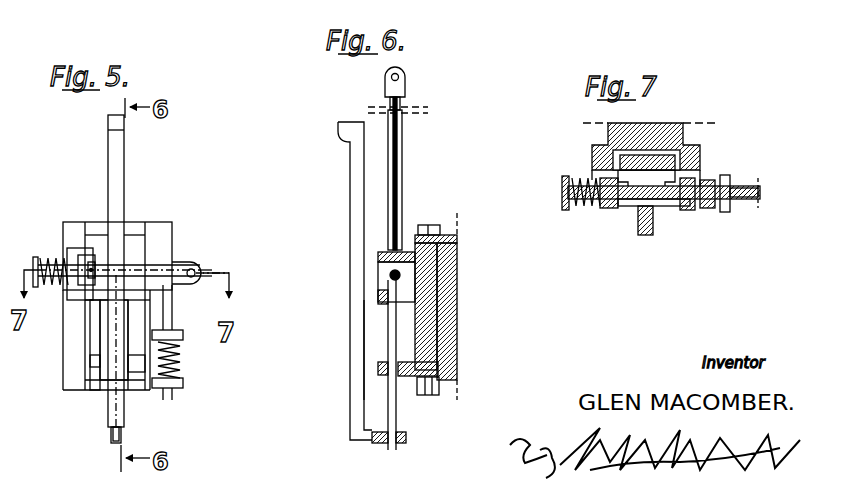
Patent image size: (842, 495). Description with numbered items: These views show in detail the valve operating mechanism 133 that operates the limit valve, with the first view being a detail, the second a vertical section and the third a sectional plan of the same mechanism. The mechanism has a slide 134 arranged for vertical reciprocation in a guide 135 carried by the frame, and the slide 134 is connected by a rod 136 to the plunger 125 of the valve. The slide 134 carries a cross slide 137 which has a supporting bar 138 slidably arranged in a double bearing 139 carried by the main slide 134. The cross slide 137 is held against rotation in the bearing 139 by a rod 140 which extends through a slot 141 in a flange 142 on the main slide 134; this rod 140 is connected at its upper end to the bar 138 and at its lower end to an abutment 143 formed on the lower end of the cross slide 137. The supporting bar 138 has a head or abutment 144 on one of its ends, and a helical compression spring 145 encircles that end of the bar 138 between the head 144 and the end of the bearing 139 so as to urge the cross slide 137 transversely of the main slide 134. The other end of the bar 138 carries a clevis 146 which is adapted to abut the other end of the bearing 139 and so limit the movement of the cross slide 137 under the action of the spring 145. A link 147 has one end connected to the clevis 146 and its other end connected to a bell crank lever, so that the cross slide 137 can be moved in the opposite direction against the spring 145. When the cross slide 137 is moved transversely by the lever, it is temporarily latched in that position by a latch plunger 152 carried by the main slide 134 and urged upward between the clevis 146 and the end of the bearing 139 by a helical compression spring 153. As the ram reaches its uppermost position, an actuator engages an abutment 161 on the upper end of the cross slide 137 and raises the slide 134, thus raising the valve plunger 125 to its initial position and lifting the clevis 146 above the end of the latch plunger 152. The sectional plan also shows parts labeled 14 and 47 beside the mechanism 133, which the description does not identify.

In FIG. 7, the shaft 14 is at (680, 212).
In FIG. 7, the rod end 47 is at (760, 188).
In FIG. 6, the plunger 125 is at (408, 69).
In FIG. 5, the valve operating mechanism 133 is at (193, 180).
In FIG. 6, the valve operating mechanism 133 is at (480, 255).
In FIG. 7, the valve operating mechanism 133 is at (675, 265).
In FIG. 5, the slide 134 is at (102, 340).
In FIG. 6, the slide 134 is at (420, 348).
In FIG. 7, the slide 134 is at (628, 207).
In FIG. 5, the guide 135 is at (78, 385).
In FIG. 6, the guide 135 is at (427, 384).
In FIG. 7, the guide 135 is at (700, 156).
In FIG. 6, the rod 136 is at (402, 172).
In FIG. 5, the cross slide 137 is at (118, 173).
In FIG. 6, the cross slide 137 is at (357, 327).
In FIG. 7, the cross slide 137 is at (654, 222).
In FIG. 5, the supporting bar 138 is at (45, 257).
In FIG. 6, the supporting bar 138 is at (389, 276).
In FIG. 7, the supporting bar 138 is at (580, 180).
In FIG. 5, the double bearing 139 is at (76, 252).
In FIG. 6, the double bearing 139 is at (405, 250).
In FIG. 7, the double bearing 139 is at (604, 210).
In FIG. 5, the rod 140 is at (110, 440).
In FIG. 6, the rod 140 is at (393, 448).
In FIG. 5, the slot 141 is at (130, 360).
In FIG. 6, the slot 141 is at (385, 366).
In FIG. 5, the flange 142 is at (100, 362).
In FIG. 6, the flange 142 is at (402, 376).
In FIG. 6, the abutment 143 is at (362, 442).
In FIG. 5, the head 144 is at (36, 258).
In FIG. 7, the head 144 is at (561, 190).
In FIG. 5, the helical compression spring 145 is at (62, 284).
In FIG. 7, the helical compression spring 145 is at (578, 208).
In FIG. 5, the clevis 146 is at (185, 262).
In FIG. 5, the link 147 is at (212, 272).
In FIG. 5, the latch plunger 152 is at (168, 307).
In FIG. 5, the helical compression spring 153 is at (183, 364).
In FIG. 6, the abutment 161 is at (337, 127).